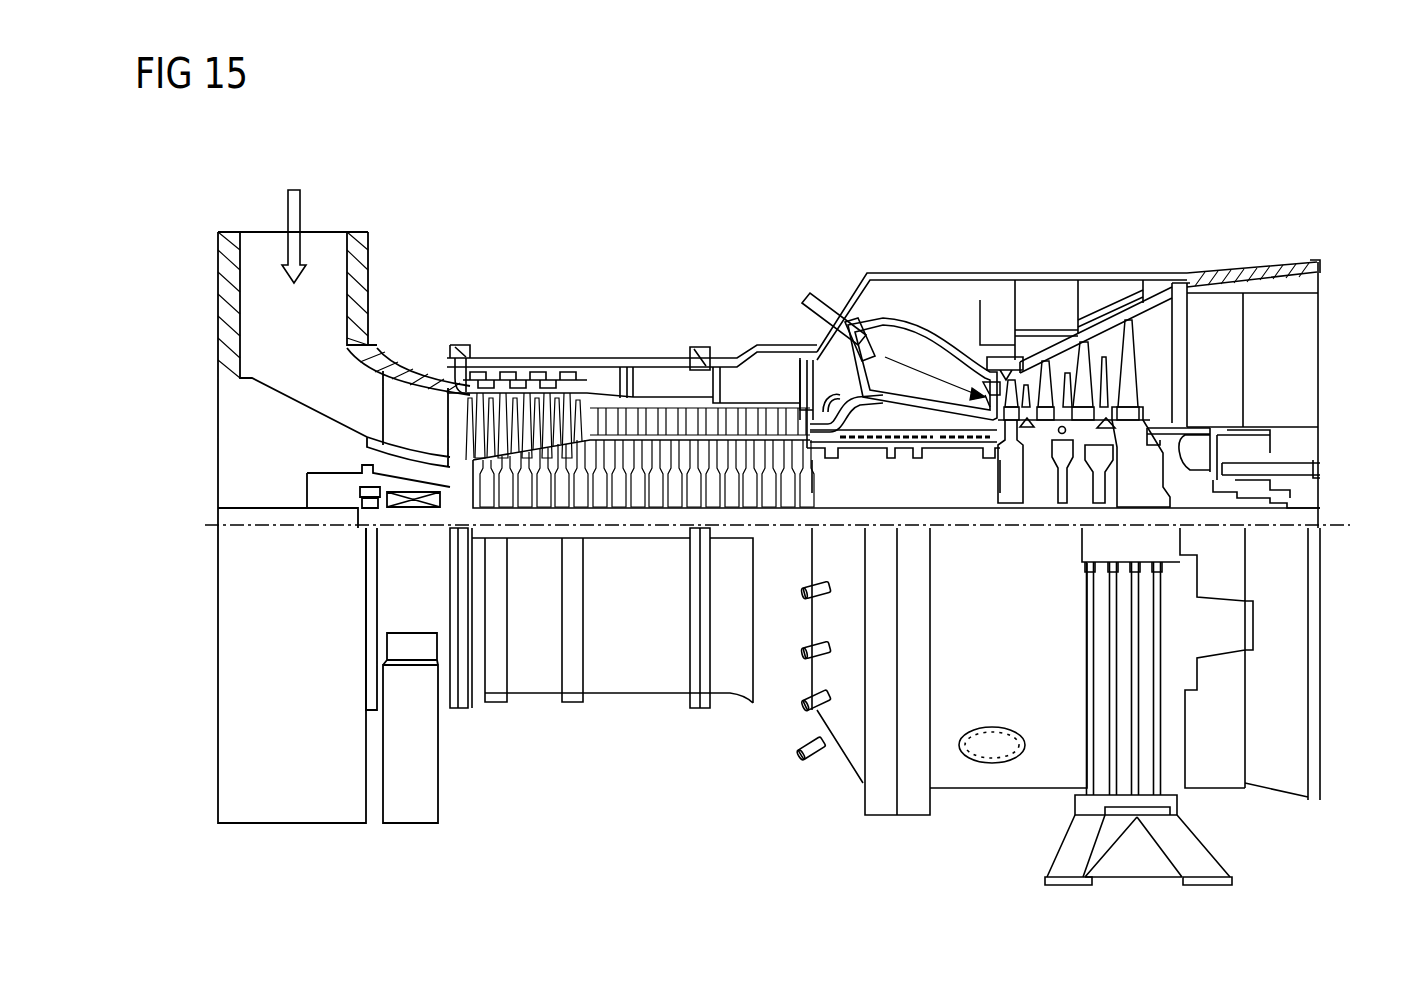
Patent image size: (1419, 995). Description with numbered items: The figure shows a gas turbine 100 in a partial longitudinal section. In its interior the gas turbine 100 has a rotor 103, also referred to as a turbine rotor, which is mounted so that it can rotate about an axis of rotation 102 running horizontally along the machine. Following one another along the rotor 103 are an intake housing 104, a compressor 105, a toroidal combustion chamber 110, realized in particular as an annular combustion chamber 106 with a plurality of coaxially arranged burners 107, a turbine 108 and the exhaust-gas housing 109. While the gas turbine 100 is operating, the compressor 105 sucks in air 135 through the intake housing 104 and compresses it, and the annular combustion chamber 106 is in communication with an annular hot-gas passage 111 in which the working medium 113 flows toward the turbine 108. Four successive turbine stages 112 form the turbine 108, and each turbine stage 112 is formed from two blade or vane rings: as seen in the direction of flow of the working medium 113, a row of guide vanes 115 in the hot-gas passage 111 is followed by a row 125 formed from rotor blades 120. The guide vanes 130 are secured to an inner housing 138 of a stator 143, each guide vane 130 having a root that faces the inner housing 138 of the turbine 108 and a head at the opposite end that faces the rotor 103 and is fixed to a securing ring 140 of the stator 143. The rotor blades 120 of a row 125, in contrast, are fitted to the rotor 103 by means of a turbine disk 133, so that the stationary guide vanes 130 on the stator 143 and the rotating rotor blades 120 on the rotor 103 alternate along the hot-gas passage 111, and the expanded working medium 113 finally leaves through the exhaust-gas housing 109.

The gas turbine 100 is at (623, 238).
The axis of rotation 102 is at (205, 521).
The rotor 103 is at (746, 408).
The intake housing 104 is at (357, 296).
The compressor 105 is at (547, 340).
The annular combustion chamber 106 is at (975, 345).
The burners 107 is at (808, 300).
The turbine 108 is at (1016, 238).
The exhaust-gas housing 109 is at (1228, 290).
The combustion chamber 110 is at (880, 325).
The hot-gas passage 111 is at (1152, 357).
The turbine stages 112 is at (1135, 238).
The working medium 113 is at (897, 343).
The row of guide vanes 115 is at (1099, 297).
The rotor blades 120 is at (1104, 378).
The row 125 is at (1160, 282).
The guide vanes 130 is at (1035, 365).
The turbine disk 133 is at (1140, 488).
The air 135 is at (300, 222).
The inner housing 138 is at (1043, 314).
The securing ring 140 is at (995, 380).
The stator 143 is at (980, 300).